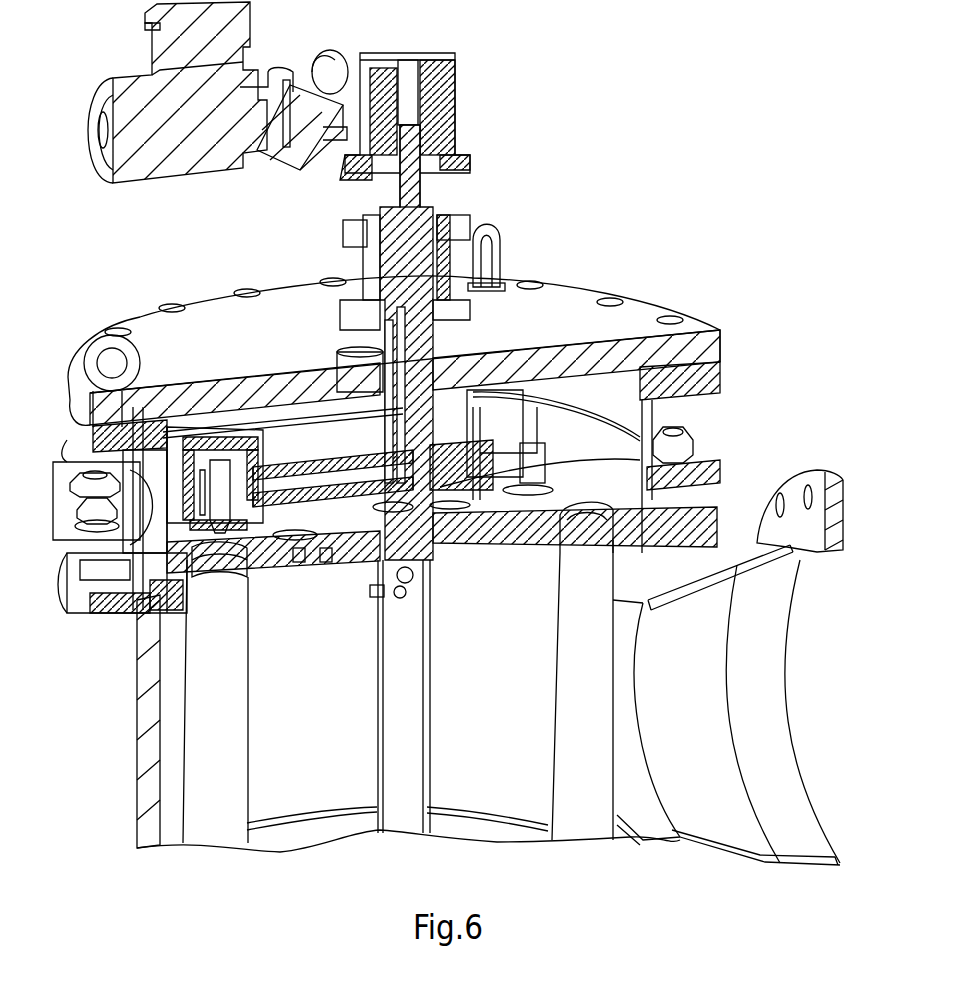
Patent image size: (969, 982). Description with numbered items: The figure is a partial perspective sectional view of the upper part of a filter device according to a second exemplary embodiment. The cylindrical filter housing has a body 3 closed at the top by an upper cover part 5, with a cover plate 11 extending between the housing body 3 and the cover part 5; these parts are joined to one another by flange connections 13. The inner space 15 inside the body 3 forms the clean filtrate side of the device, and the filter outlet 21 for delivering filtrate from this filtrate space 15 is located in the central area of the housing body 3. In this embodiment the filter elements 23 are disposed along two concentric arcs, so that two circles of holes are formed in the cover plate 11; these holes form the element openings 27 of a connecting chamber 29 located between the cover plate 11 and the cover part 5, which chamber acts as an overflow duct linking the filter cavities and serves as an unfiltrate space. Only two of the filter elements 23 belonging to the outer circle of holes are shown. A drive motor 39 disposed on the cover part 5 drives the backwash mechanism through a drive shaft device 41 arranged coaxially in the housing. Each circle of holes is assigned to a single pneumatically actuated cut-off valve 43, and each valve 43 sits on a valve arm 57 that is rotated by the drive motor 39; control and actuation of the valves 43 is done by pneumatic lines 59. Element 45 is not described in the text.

The body 3 is at (157, 710).
The upper cover part 5 is at (707, 347).
The cover plate 11 is at (140, 613).
The flange connections 13 is at (687, 507).
The inner space 15 is at (293, 783).
The filter outlet 21 is at (709, 580).
The filter elements 23 is at (248, 713).
The element openings 27 is at (597, 510).
The connecting chamber 29 is at (600, 433).
The drive motor 39 is at (182, 147).
The drive shaft device 41 is at (440, 600).
The cut-off valve 43 is at (203, 437).
The cap 45 is at (200, 575).
The valve arm 57 is at (287, 435).
The pneumatic lines 59 is at (400, 300).